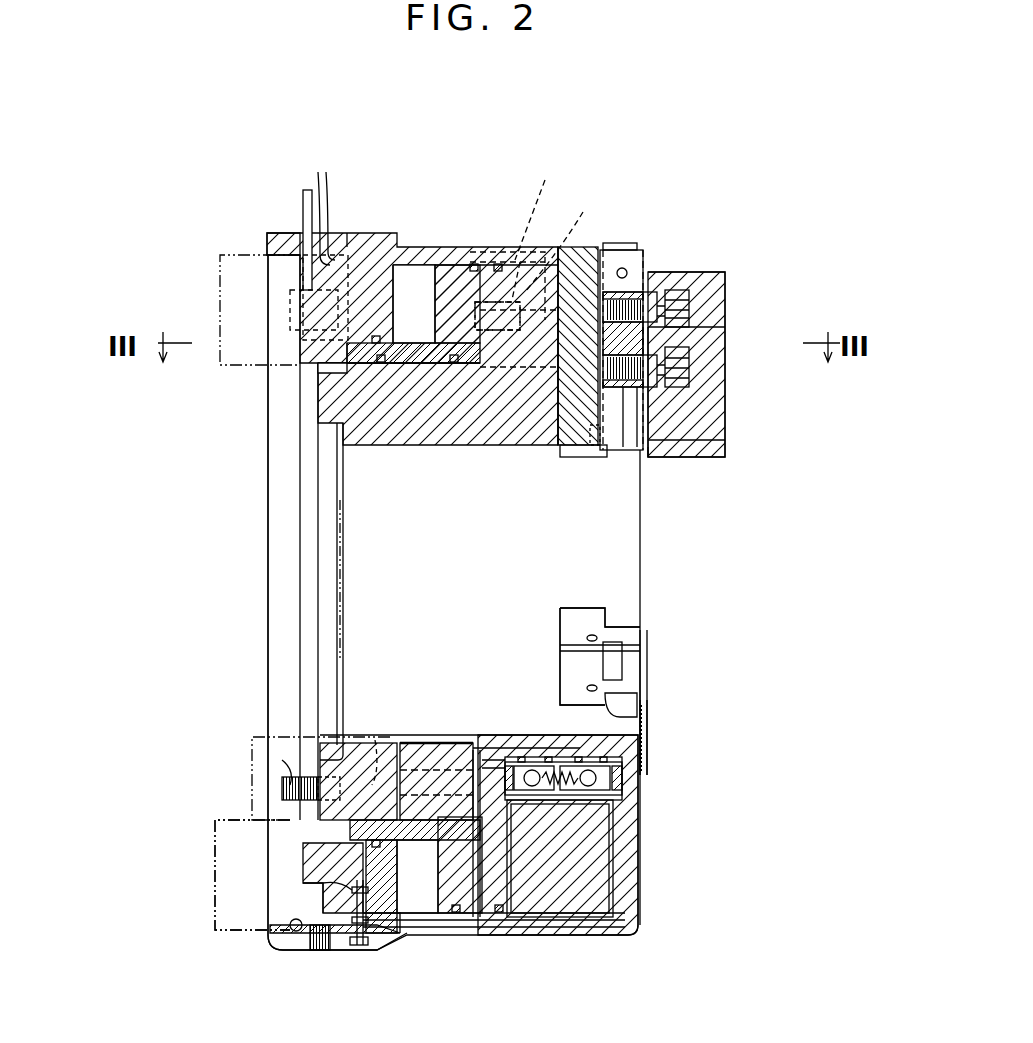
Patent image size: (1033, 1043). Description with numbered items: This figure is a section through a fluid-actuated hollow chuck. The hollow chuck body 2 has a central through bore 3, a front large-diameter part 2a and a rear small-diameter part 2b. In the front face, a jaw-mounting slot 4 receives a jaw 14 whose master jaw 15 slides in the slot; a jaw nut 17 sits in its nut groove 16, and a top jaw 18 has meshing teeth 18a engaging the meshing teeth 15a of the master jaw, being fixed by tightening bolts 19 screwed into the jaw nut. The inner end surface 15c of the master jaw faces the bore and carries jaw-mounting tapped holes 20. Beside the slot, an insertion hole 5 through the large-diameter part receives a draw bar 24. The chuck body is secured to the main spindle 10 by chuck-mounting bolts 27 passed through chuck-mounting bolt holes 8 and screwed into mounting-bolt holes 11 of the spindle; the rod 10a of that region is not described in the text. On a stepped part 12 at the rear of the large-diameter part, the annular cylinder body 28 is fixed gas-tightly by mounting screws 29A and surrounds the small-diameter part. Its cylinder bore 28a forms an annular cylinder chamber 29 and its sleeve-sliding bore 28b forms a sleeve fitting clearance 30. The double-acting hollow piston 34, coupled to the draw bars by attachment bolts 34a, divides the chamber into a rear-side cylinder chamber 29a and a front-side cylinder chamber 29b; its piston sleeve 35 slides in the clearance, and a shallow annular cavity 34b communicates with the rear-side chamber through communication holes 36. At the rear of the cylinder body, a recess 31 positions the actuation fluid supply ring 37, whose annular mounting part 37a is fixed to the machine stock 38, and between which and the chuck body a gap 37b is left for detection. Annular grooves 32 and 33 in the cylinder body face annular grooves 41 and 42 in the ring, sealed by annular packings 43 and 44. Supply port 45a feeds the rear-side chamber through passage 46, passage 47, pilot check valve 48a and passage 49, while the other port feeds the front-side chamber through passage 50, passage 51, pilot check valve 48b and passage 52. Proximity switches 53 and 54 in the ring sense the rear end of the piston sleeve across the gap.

The hollow chuck body 2 is at (528, 240).
The large-diameter part 2a is at (562, 272).
The small-diameter part 2b is at (318, 408).
The central through bore 3 is at (384, 447).
The jaw-mounting slot 4 is at (626, 284).
The insertion hole 5 is at (555, 268).
The chuck-mounting bolt hole 8 is at (378, 745).
The main spindle 10 is at (252, 748).
The housing rod 10a is at (298, 452).
The mounting-bolt hole 11 is at (280, 786).
The stepped part 12 is at (498, 256).
The jaw 14 is at (722, 272).
The master jaw 15 is at (645, 248).
The meshing teeth 15a is at (648, 444).
The inner end surface 15c is at (568, 456).
The nut groove 16 is at (684, 268).
The jaw nut 17 is at (682, 312).
The top jaw 18 is at (712, 402).
The meshing teeth 18a is at (644, 458).
The tightening bolt 19 is at (700, 326).
The jaw-mounting tapped hole 20 is at (596, 452).
The draw bar 24 is at (622, 248).
The chuck-mounting bolt 27 is at (287, 760).
The annular cylinder body 28 is at (365, 232).
The cylinder bore 28a is at (425, 262).
The sleeve-sliding bore 28b is at (412, 262).
The annular cylinder chamber 29 is at (466, 265).
The mounting screw 29A is at (549, 206).
The rear-side cylinder chamber 29a is at (467, 908).
The front-side cylinder chamber 29b is at (510, 843).
The sleeve fitting clearance 30 is at (376, 372).
The recess 31 is at (348, 235).
The annular groove 32 is at (377, 952).
The annular groove 33 is at (390, 935).
The hollow piston 34 is at (468, 258).
The attachment bolt 34a is at (579, 241).
The annular cavity 34b is at (485, 815).
The piston sleeve 35 is at (402, 364).
The communication hole 36 is at (483, 812).
The actuation fluid supply ring 37 is at (306, 243).
The annular mounting part 37a is at (267, 245).
The gap 37b is at (300, 365).
The machine stock 38 is at (215, 830).
The annular groove 41 is at (350, 953).
The annular groove 42 is at (323, 895).
The annular packing 43 is at (345, 950).
The annular packing 44 is at (293, 920).
The supply port 45a is at (313, 953).
The passage 46 is at (312, 950).
The passage 47 is at (588, 930).
The pilot check valve 48a is at (628, 765).
The pilot check valve 48b is at (520, 760).
The passage 49 is at (438, 740).
The passage 50 is at (305, 882).
The passage 51 is at (488, 945).
The passage 52 is at (480, 745).
The proximity switch 53 is at (292, 300).
The proximity switch 54 is at (302, 323).